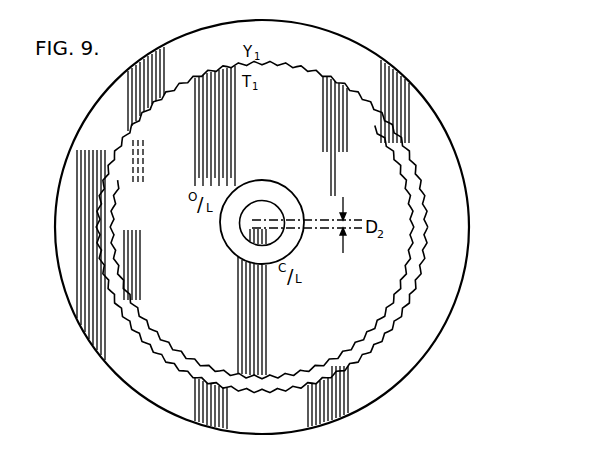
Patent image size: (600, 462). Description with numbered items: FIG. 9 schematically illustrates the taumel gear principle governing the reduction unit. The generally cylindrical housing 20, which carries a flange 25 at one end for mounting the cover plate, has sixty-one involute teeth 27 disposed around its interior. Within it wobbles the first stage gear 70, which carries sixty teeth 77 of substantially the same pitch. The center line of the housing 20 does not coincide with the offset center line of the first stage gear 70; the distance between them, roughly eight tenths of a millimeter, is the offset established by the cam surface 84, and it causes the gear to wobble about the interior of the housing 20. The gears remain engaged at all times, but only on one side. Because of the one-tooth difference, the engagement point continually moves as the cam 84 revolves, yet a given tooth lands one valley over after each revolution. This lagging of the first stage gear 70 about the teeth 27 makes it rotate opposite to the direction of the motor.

The housing 20 is at (398, 386).
The involute teeth 27 is at (417, 173).
The teeth 77 is at (397, 318).
The flange 25 is at (358, 400).
The first stage gear 70 is at (205, 349).
The cam surface 84 is at (268, 213).